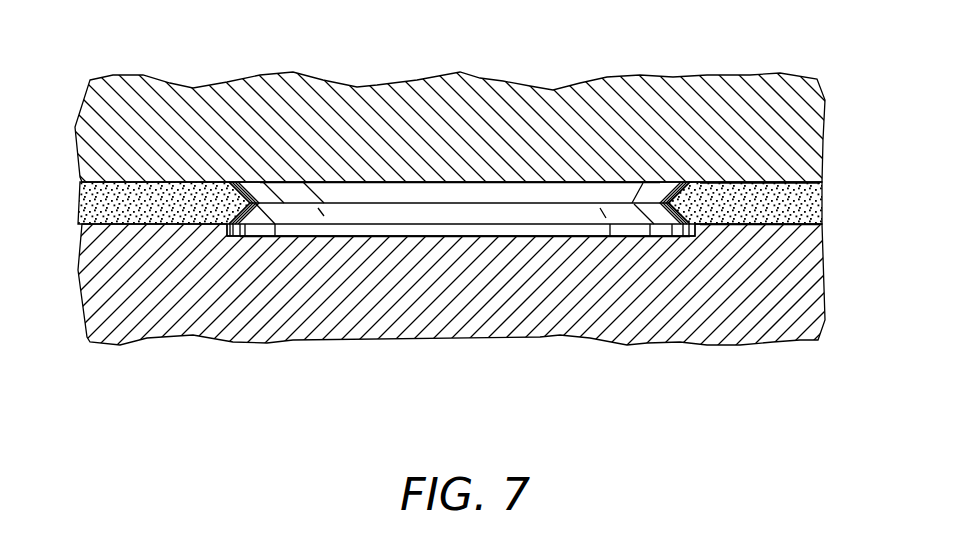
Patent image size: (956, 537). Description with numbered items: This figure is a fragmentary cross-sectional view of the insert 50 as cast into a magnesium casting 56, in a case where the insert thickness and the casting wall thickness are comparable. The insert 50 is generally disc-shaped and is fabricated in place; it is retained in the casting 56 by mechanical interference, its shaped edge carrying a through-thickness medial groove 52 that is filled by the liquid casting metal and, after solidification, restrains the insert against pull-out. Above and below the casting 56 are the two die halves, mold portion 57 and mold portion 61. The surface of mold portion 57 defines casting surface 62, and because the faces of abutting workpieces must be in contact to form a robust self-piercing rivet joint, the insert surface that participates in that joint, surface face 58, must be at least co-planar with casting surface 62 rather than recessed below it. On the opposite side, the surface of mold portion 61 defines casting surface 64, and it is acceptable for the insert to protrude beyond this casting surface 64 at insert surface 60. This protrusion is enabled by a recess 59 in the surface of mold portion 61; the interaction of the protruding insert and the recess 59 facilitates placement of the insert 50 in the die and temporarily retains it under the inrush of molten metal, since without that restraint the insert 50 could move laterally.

The insert 50 is at (343, 176).
The medial groove 52 is at (233, 202).
The magnesium casting 56 is at (672, 204).
The mold portion 57 is at (227, 117).
The surface face 58 is at (540, 182).
The recess 59 is at (231, 234).
The insert surface 60 is at (465, 240).
The mold portion 61 is at (178, 298).
The casting surface 62 is at (728, 188).
The casting surface 64 is at (753, 226).